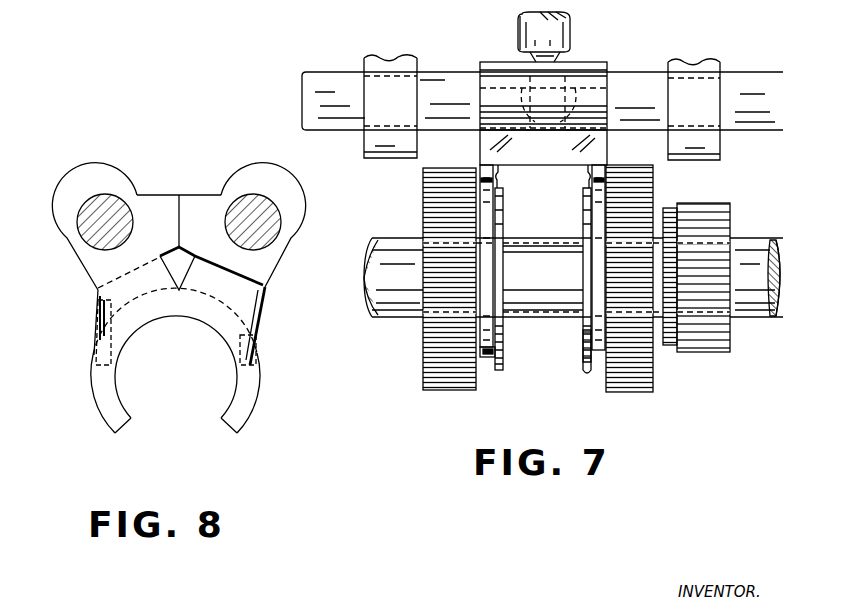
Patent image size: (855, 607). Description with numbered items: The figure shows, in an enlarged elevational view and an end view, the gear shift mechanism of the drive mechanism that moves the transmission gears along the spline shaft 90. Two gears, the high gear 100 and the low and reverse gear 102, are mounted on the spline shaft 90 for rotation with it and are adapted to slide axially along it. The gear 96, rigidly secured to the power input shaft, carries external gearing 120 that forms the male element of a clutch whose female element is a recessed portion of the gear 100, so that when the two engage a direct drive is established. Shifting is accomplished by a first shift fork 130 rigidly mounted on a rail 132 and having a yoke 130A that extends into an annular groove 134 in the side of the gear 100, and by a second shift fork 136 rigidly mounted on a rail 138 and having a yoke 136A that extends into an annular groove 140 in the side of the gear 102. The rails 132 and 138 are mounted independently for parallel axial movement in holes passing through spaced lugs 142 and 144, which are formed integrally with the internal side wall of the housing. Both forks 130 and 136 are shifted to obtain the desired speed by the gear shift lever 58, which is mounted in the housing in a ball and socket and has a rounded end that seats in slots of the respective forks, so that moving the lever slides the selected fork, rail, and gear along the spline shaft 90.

In FIG. 7, the lever 58 is at (565, 30).
In FIG. 7, the spline shaft 90 is at (402, 305).
In FIG. 7, the gear 96 is at (700, 210).
In FIG. 7, the gear 100 is at (658, 386).
In FIG. 7, the gear 102 is at (432, 378).
In FIG. 7, the external gearing 120 is at (666, 208).
In FIG. 7, the first shift fork 130 is at (598, 76).
In FIG. 8, the first shift fork 130 is at (236, 183).
In FIG. 7, the yoke 130A is at (590, 224).
In FIG. 8, the yoke 130A is at (248, 398).
In FIG. 7, the rail 132 is at (454, 86).
In FIG. 8, the rail 132 is at (276, 220).
In FIG. 7, the annular groove 134 is at (590, 372).
In FIG. 8, the second shift fork 136 is at (96, 275).
In FIG. 7, the yoke 136A is at (494, 182).
In FIG. 8, the yoke 136A is at (104, 398).
In FIG. 8, the rail 138 is at (95, 206).
In FIG. 7, the annular groove 140 is at (486, 362).
In FIG. 7, the lug 142 is at (388, 76).
In FIG. 7, the lug 144 is at (703, 78).